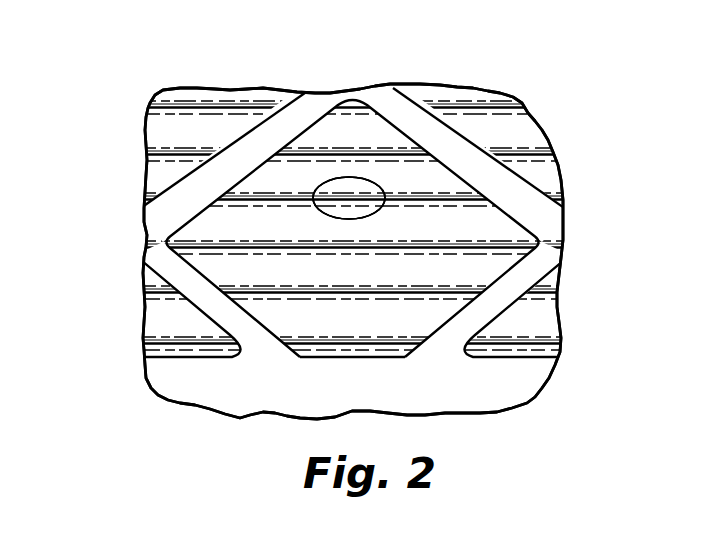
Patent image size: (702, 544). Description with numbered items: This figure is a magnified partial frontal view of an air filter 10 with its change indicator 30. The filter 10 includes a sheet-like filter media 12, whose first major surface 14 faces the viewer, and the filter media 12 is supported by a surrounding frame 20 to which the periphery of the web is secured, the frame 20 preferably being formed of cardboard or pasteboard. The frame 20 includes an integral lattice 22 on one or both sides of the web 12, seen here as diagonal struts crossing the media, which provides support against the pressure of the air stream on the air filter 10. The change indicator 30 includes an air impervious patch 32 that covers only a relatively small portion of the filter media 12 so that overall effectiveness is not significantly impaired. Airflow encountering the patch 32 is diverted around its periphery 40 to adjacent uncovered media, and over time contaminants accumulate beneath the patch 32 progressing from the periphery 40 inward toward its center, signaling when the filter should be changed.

The filter 10 is at (503, 72).
The filter media 12 is at (530, 128).
The first major surface 14 is at (160, 130).
The frame 20 is at (537, 380).
The lattice 22 is at (162, 265).
The change indicator 30 is at (348, 166).
The air impervious patch 32 is at (331, 184).
The periphery 40 is at (375, 180).